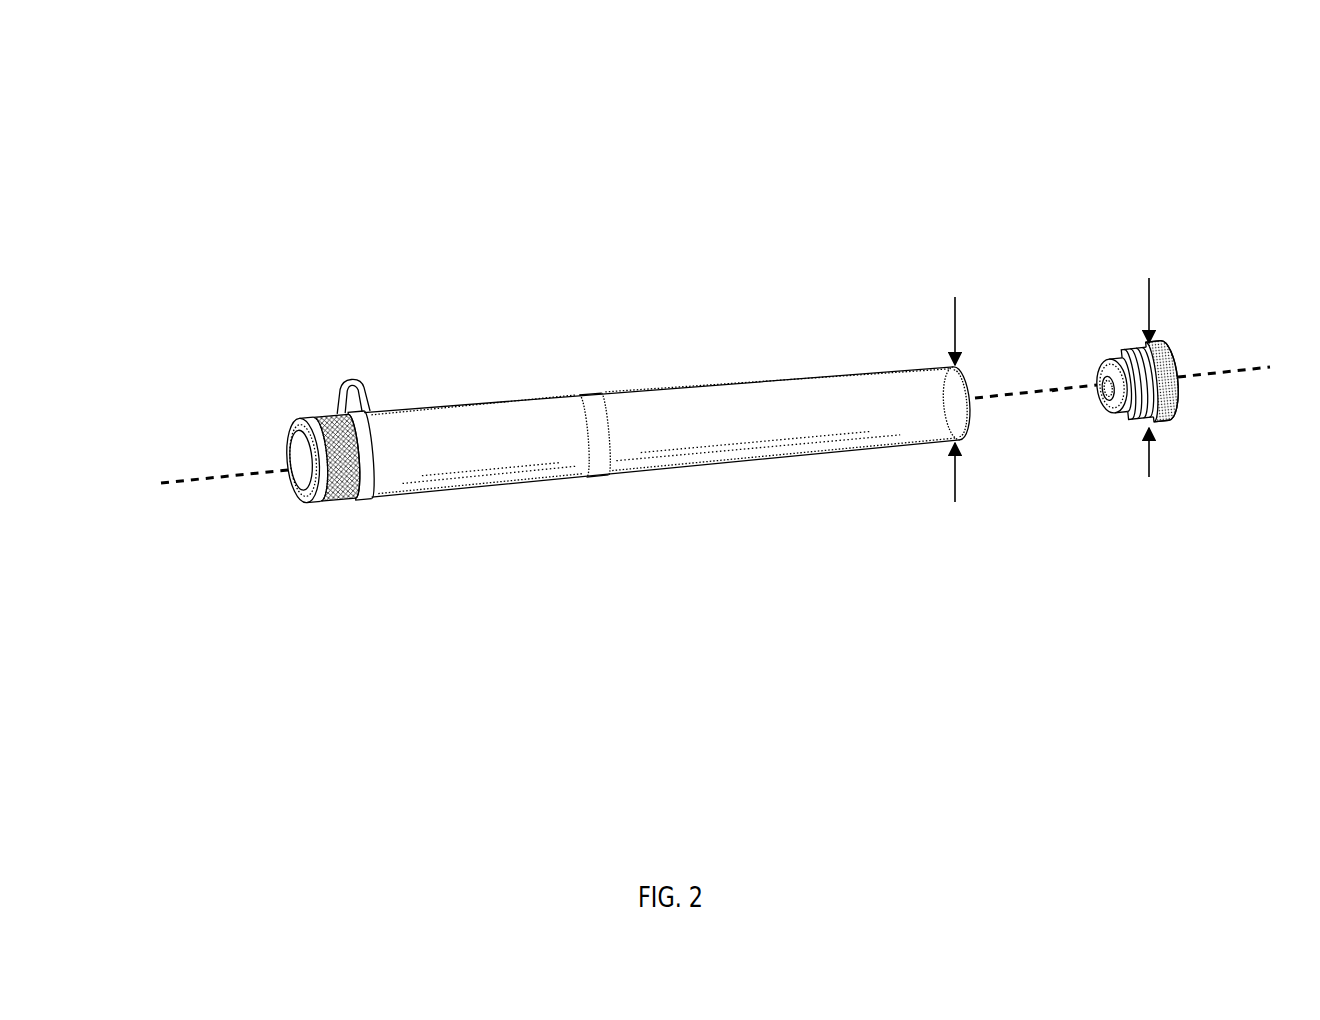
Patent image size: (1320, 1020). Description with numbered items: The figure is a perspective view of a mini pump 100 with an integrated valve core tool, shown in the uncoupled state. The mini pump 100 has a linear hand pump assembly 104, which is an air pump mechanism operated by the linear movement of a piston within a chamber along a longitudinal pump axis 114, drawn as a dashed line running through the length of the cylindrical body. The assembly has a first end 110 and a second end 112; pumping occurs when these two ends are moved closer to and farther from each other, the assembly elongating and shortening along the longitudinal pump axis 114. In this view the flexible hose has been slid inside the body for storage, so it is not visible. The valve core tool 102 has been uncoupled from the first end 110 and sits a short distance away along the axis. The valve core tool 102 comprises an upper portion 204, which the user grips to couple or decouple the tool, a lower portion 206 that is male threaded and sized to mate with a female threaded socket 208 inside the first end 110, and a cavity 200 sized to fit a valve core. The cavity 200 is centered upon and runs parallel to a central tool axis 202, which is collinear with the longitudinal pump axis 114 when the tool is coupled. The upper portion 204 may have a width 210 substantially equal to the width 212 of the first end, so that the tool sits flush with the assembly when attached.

The mini pump 100 is at (1016, 151).
The valve core tool 102 is at (1111, 465).
The linear hand pump assembly 104 is at (698, 508).
The first end 110 is at (943, 367).
The second end 112 is at (368, 500).
The longitudinal pump axis 114 is at (163, 482).
The cavity 200 is at (1104, 389).
The central tool axis 202 is at (1055, 391).
The upper portion 204 is at (1157, 425).
The lower portion 206 is at (1116, 349).
The female threaded socket 208 is at (979, 428).
The width 210 is at (1150, 305).
The width 212 is at (955, 310).